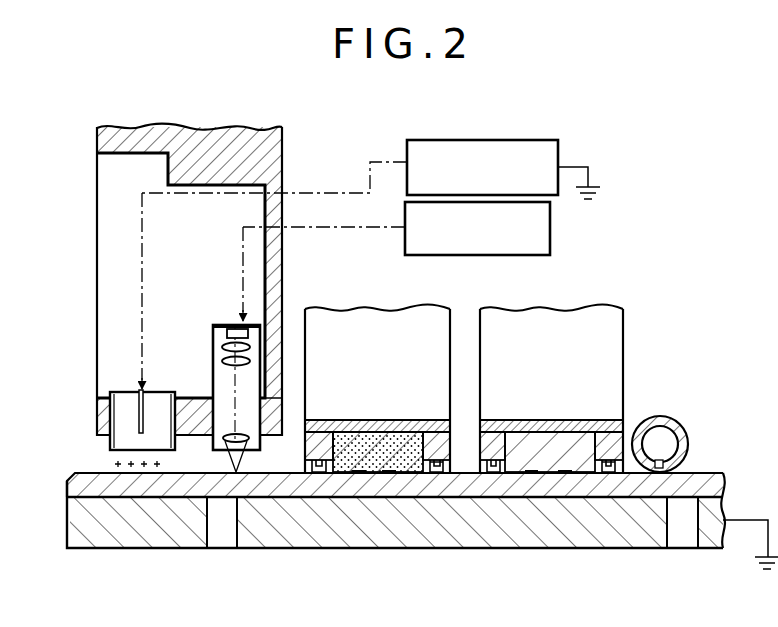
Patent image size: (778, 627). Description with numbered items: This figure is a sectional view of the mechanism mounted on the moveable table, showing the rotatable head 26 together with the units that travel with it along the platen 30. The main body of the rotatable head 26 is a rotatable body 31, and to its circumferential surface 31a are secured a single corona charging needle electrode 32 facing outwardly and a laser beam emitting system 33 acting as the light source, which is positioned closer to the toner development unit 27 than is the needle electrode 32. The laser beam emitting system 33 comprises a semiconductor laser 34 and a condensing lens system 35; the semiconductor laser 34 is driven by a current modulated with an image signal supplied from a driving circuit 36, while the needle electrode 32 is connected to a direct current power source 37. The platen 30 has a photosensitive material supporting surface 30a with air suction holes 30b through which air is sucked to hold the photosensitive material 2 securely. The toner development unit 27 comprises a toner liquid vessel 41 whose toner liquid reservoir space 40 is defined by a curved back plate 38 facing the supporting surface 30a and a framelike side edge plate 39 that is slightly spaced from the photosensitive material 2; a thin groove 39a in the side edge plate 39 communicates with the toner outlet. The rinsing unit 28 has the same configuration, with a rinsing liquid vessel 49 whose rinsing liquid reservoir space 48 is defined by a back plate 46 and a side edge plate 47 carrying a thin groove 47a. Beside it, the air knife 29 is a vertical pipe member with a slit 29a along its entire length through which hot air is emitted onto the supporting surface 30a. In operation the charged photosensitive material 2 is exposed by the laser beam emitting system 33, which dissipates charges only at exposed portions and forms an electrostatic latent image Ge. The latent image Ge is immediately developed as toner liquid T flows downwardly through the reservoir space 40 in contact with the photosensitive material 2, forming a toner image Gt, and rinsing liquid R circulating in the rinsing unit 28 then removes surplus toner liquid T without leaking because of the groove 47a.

The photosensitive material 2 is at (75, 487).
The rotatable head 26 is at (193, 297).
The toner development unit 27 is at (377, 368).
The rinsing unit 28 is at (551, 368).
The air knife 29 is at (687, 424).
The slit 29a is at (658, 472).
The platen 30 is at (407, 542).
The photosensitive material supporting surface 30a is at (158, 492).
The air suction holes 30b is at (208, 530).
The rotatable body 31 is at (196, 295).
The circumferential surface 31a is at (98, 437).
The corona charging needle electrode 32 is at (139, 423).
The laser beam emitting system 33 is at (207, 349).
The semiconductor laser 34 is at (232, 332).
The condensing lens system 35 is at (208, 345).
The driving circuit 36 is at (550, 235).
The direct current power source 37 is at (502, 140).
The curved back plate 38 is at (323, 421).
The side edge plate 39 is at (434, 437).
The thin groove 39a is at (430, 475).
The toner liquid reservoir space 40 is at (362, 437).
The toner liquid vessel 41 is at (386, 407).
The back plate 46 is at (503, 420).
The side edge plate 47 is at (608, 447).
The thin groove 47a is at (607, 472).
The rinsing liquid reservoir space 48 is at (542, 447).
The rinsing liquid vessel 49 is at (562, 403).
The electrostatic latent image Ge is at (355, 475).
The toner liquid T is at (400, 475).
The toner image Gt is at (527, 475).
The rinsing liquid R is at (583, 472).